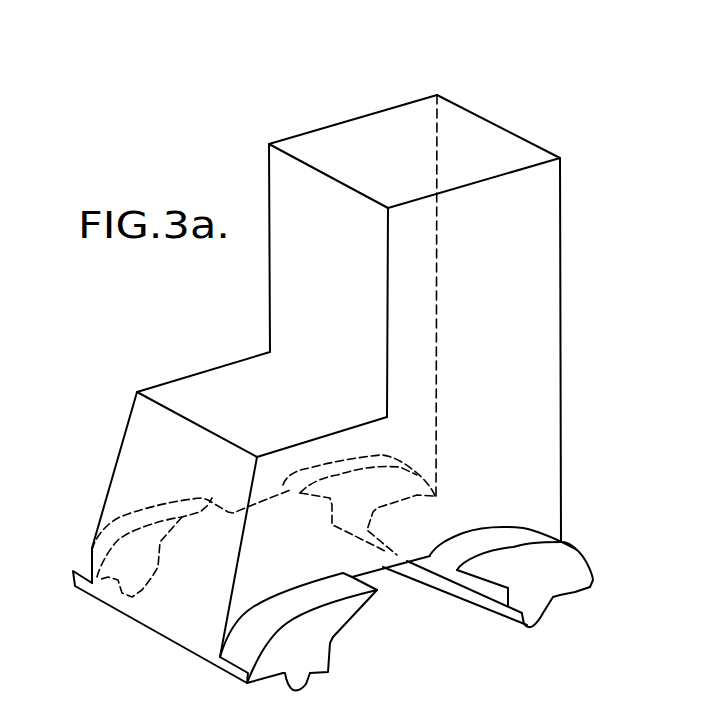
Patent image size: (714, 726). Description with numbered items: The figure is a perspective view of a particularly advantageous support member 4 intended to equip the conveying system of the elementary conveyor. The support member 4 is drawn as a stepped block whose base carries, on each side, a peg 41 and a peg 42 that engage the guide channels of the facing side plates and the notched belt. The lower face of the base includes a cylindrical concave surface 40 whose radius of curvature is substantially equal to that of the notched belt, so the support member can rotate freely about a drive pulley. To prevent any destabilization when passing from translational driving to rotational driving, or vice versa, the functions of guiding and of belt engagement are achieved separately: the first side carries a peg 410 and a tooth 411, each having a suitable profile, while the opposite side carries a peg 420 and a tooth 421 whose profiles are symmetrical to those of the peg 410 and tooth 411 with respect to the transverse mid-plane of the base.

The support member 4 is at (520, 232).
The cylindrical concave surface 40 is at (385, 569).
The peg 41 is at (202, 607).
The peg 410 is at (265, 630).
The tooth 411 is at (310, 673).
The peg 42 is at (462, 546).
The peg 420 is at (573, 548).
The tooth 421 is at (530, 608).